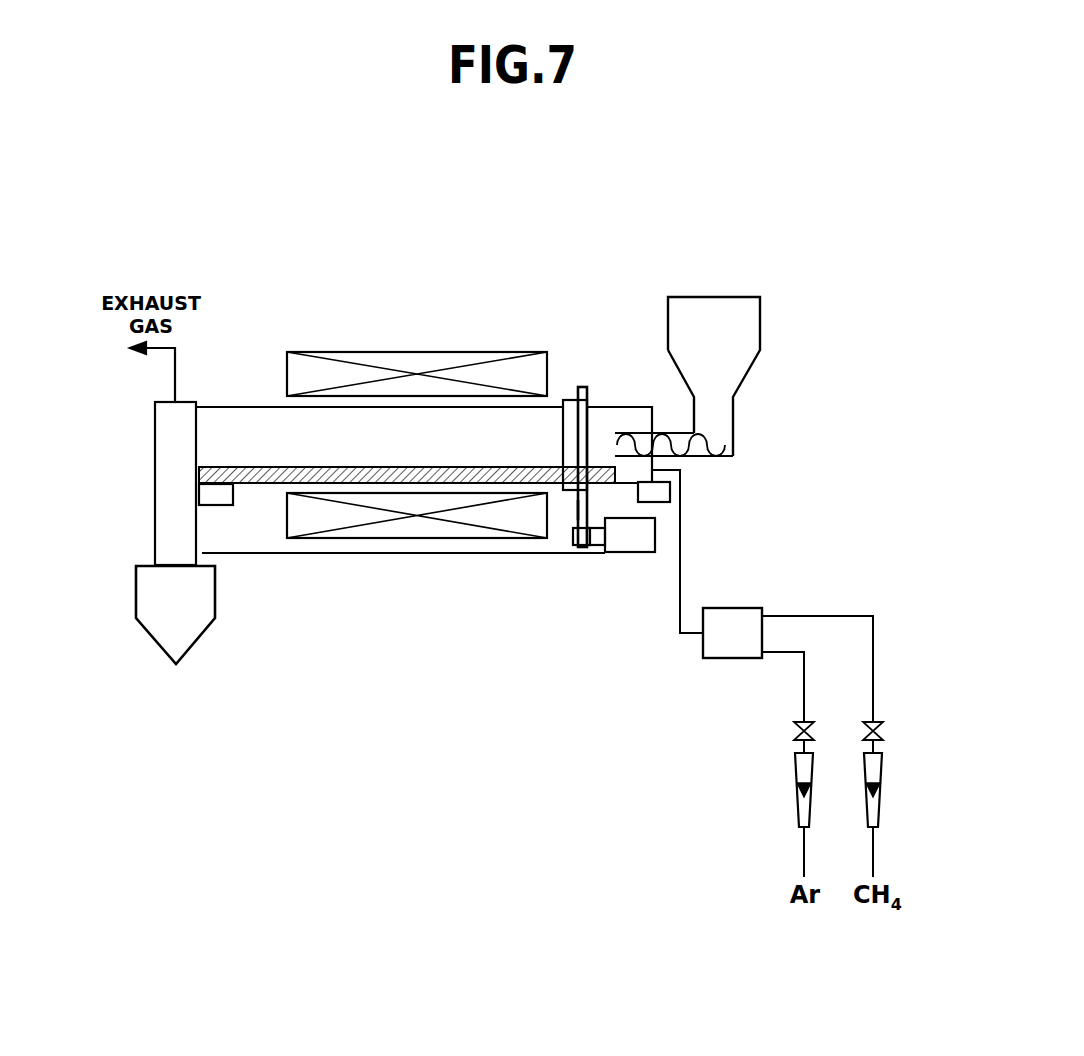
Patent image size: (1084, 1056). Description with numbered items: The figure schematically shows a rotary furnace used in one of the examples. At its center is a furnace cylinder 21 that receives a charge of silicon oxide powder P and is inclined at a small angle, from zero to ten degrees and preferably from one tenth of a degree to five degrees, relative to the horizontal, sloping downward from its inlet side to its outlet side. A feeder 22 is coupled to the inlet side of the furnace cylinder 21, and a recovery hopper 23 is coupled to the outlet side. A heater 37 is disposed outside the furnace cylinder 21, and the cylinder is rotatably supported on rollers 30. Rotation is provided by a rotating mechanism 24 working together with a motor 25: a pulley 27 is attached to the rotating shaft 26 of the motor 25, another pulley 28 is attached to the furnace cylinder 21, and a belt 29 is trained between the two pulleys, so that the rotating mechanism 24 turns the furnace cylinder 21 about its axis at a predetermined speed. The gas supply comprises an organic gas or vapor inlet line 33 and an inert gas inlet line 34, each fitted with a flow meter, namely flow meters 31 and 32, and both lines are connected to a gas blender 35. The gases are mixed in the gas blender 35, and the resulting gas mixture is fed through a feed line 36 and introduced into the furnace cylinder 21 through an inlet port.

The furnace cylinder 21 is at (245, 425).
The feeder 22 is at (742, 330).
The recovery hopper 23 is at (160, 622).
The rotating mechanism 24 is at (583, 387).
The motor 25 is at (642, 530).
The rotating shaft 26 is at (593, 548).
The pulley 27 is at (580, 550).
The pulley 28 is at (588, 432).
The belt 29 is at (575, 512).
The rollers 30 is at (210, 493).
The flow meter 31 is at (882, 768).
The flow meter 32 is at (796, 770).
The organic gas or vapor inlet line 33 is at (875, 686).
The inert gas inlet line 34 is at (804, 692).
The gas blender 35 is at (720, 658).
The feed line 36 is at (682, 575).
The heater 37 is at (395, 360).
The silicon oxide powder P is at (348, 477).